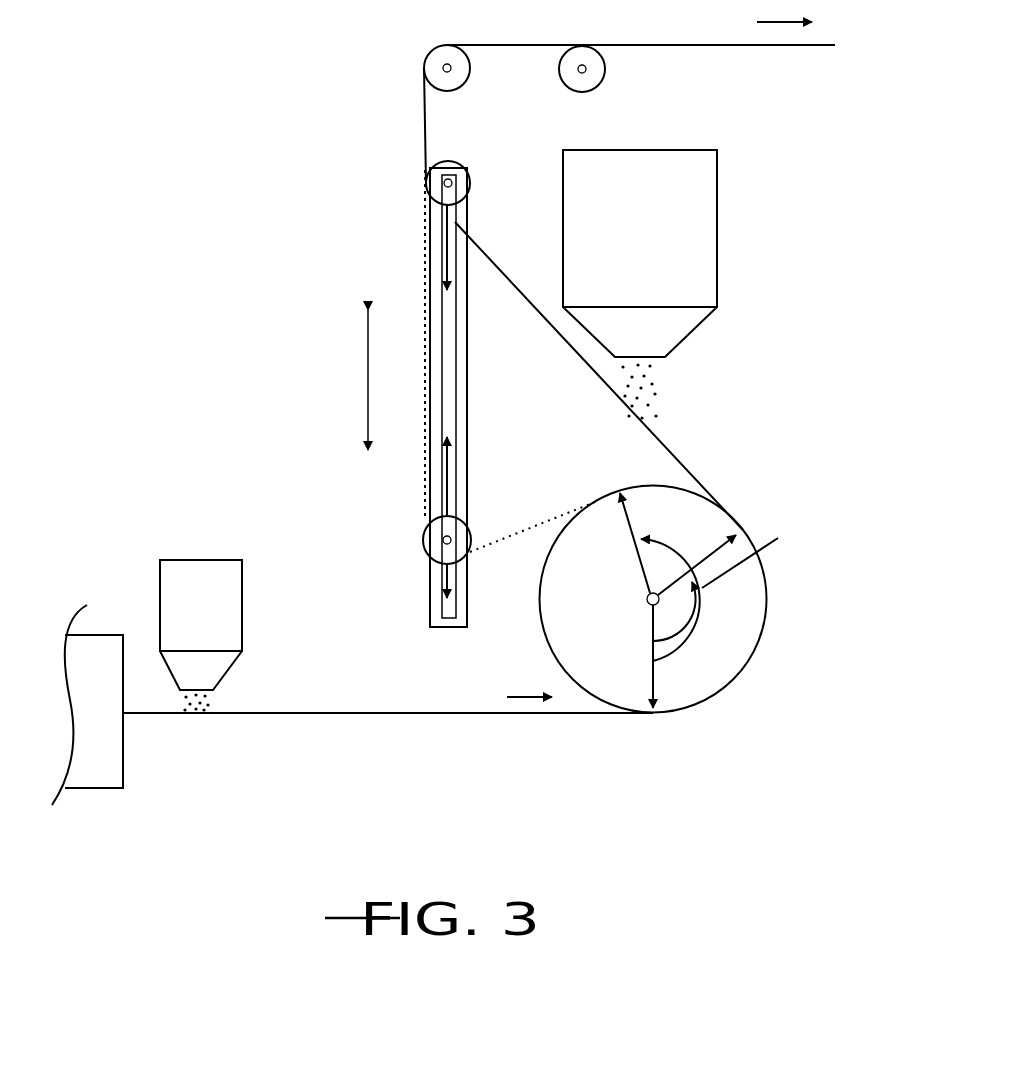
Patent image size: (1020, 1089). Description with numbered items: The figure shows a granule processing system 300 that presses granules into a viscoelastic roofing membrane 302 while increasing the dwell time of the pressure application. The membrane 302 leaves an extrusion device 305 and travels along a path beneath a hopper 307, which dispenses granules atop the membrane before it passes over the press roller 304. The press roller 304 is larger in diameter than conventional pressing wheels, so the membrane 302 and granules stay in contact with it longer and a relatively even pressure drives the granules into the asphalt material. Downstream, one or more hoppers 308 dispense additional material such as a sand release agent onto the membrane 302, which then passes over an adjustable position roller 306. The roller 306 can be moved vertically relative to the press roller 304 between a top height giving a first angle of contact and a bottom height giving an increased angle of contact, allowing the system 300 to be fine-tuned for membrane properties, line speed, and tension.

The granule processing system 300 is at (744, 154).
The viscoelastic membrane 302 is at (492, 714).
The pressure wheel 304 is at (675, 515).
The extrusion device 305 is at (123, 738).
The adjustable position roller 306 is at (432, 542).
The hopper 307 is at (188, 558).
The hopper 308 is at (717, 240).